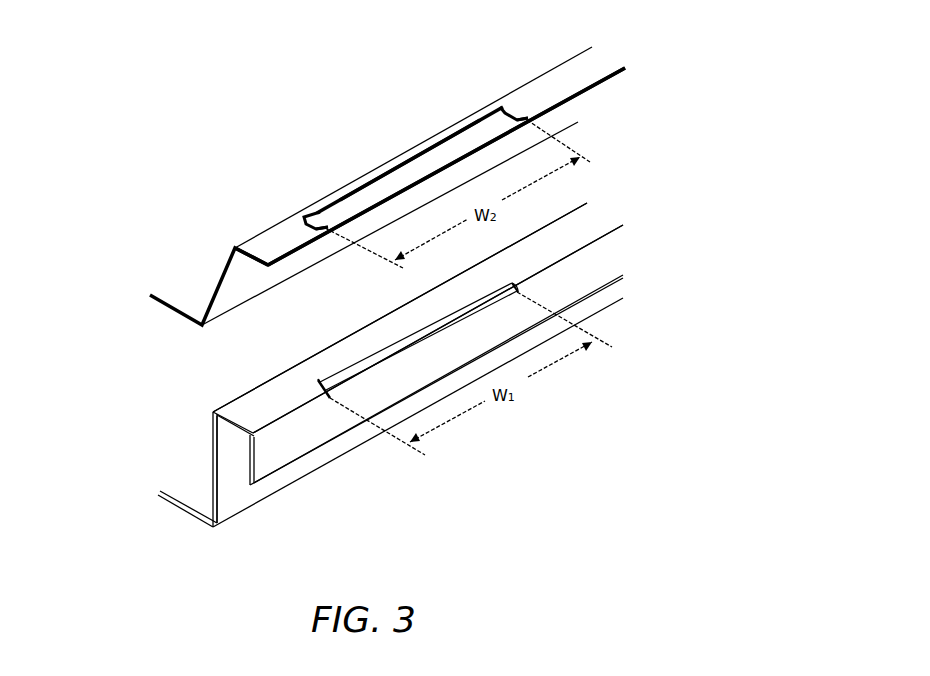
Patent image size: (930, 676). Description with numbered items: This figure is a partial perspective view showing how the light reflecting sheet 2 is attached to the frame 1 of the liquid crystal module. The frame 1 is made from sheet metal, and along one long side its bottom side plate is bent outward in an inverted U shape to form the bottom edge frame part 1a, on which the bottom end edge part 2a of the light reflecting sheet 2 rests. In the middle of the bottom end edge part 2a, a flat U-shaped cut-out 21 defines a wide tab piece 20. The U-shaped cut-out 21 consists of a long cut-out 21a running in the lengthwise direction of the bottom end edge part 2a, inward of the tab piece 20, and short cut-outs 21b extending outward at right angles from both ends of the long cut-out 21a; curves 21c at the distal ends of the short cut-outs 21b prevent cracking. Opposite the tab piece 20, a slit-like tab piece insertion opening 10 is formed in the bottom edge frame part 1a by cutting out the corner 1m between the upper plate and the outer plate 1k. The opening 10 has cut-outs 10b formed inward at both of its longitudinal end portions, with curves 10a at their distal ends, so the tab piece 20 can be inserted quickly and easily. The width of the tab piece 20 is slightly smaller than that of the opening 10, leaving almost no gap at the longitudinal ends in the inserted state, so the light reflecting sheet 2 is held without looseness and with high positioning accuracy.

The frame 1 is at (172, 521).
The bottom edge frame part 1a is at (258, 392).
The outer plate 1k is at (323, 434).
The corner 1m is at (278, 426).
The light reflecting sheet 2 is at (158, 325).
The bottom end edge part 2a is at (257, 246).
The tab piece insertion opening 10 is at (426, 335).
The curve sections 10a is at (320, 380).
The cut-outs 10b is at (330, 384).
The tab piece 20 is at (420, 163).
The U-shaped cut-out 21 is at (466, 116).
The long cut-out 21a is at (376, 174).
The short cut-outs 21b is at (313, 214).
The curves 21c is at (329, 233).